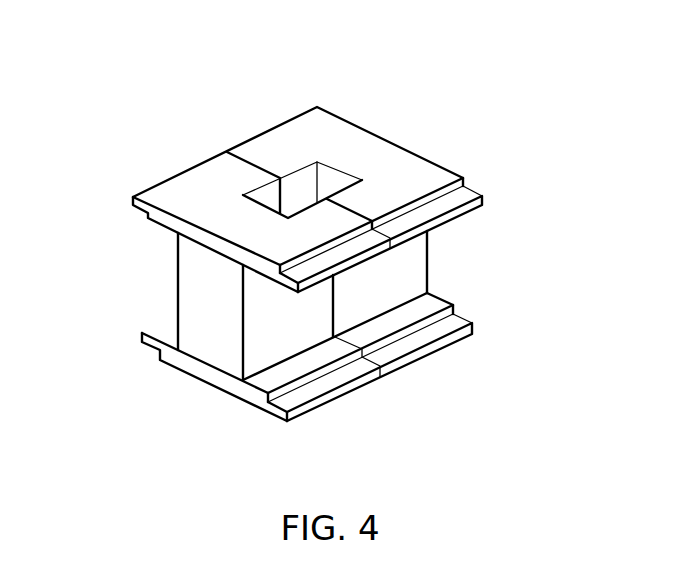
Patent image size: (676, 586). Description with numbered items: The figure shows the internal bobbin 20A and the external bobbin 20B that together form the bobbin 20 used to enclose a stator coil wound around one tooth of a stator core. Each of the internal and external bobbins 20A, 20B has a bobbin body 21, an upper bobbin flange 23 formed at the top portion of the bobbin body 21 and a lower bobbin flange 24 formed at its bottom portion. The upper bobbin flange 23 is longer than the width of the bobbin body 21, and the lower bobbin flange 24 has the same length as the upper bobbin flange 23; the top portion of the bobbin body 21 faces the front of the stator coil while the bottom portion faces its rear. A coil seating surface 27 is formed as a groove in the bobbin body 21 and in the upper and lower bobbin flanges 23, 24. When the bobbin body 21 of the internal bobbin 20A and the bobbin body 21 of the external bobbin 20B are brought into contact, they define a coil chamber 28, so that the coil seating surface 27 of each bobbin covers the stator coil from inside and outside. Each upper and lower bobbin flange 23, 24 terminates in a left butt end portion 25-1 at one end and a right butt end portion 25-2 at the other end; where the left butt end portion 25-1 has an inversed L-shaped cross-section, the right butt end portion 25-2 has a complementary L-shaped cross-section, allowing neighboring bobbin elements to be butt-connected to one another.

The bobbin 20 is at (433, 386).
The internal bobbin 20A is at (343, 390).
The external bobbin 20B is at (418, 356).
The bobbin body 21 is at (190, 292).
The upper bobbin flange 23 is at (395, 157).
The lower bobbin flange 24 is at (220, 378).
The left butt end portion 25-1 is at (152, 348).
The right butt end portion 25-2 is at (475, 192).
The coil seating surface 27 is at (266, 208).
The coil chamber 28 is at (257, 60).